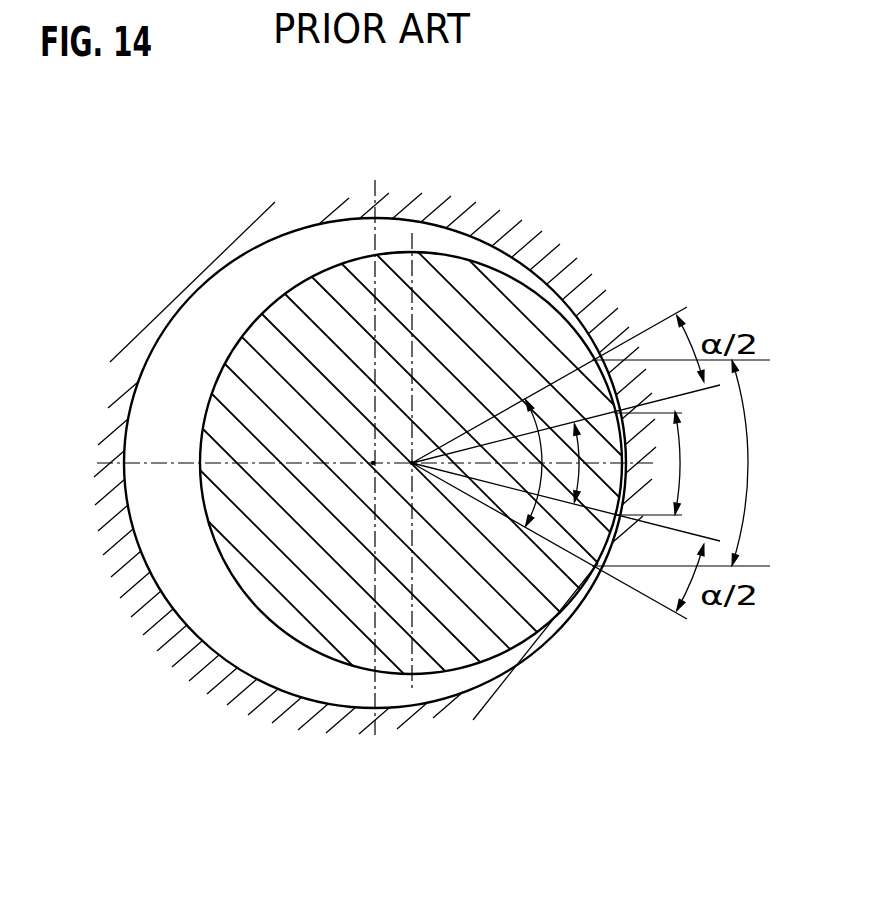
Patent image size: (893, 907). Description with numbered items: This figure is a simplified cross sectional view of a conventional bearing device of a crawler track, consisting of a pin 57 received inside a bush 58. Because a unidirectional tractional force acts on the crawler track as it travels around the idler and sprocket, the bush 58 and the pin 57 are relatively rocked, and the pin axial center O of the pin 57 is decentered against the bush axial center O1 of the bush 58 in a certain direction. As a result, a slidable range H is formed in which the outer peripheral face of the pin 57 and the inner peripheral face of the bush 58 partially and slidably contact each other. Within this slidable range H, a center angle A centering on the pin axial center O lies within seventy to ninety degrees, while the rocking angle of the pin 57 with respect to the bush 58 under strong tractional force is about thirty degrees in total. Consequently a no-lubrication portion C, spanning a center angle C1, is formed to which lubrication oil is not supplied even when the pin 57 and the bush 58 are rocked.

The pin 57 is at (437, 253).
The bush 58 is at (240, 713).
The bush axial center O1 is at (371, 466).
The pin axial center O is at (410, 466).
The center angle A is at (542, 463).
The center angle of no-lubrication portion C1 is at (593, 463).
The no-lubrication portion C is at (688, 463).
The slidable range H is at (764, 463).